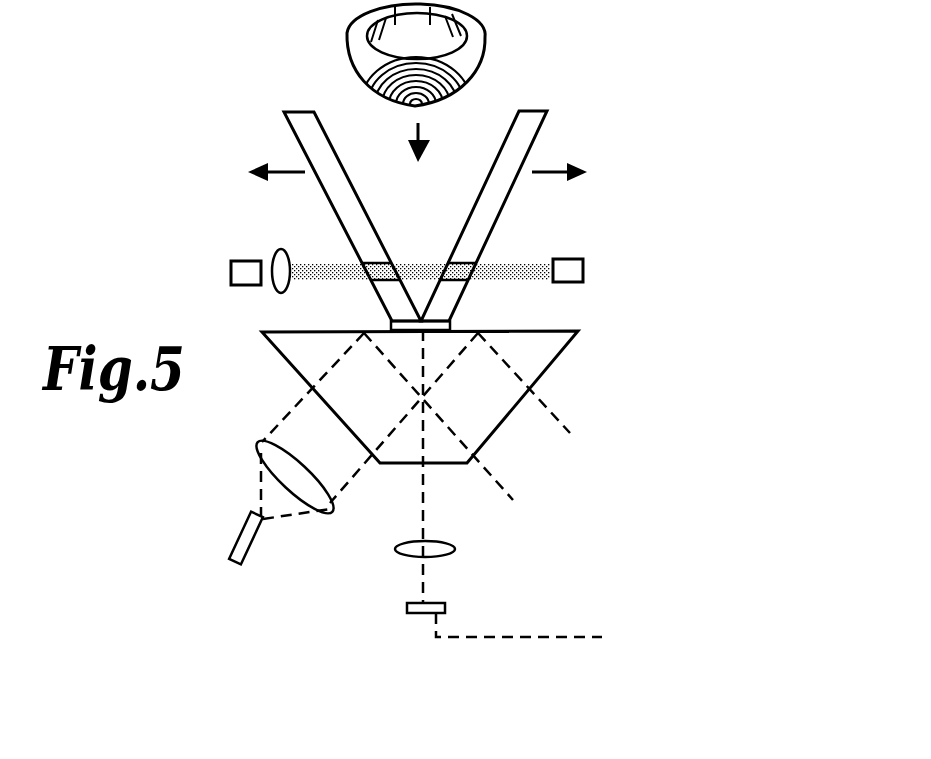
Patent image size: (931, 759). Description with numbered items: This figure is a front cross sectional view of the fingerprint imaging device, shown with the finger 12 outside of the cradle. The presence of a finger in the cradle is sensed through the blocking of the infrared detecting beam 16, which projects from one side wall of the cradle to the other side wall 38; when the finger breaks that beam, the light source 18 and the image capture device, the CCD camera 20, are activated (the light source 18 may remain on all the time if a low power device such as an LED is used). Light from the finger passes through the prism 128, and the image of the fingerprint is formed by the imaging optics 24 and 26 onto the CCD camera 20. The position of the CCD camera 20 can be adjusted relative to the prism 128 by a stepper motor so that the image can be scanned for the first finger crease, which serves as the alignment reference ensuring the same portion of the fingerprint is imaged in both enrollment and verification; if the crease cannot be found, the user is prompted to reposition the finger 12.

The finger 12 is at (467, 62).
The side walls 38 is at (367, 227).
The infrared detecting beam 16 is at (507, 282).
The prism 128 is at (557, 360).
The light source 18 is at (228, 557).
The CCD camera 20 is at (439, 547).
The imaging optics 24 is at (455, 549).
The imaging optics 26 is at (445, 608).